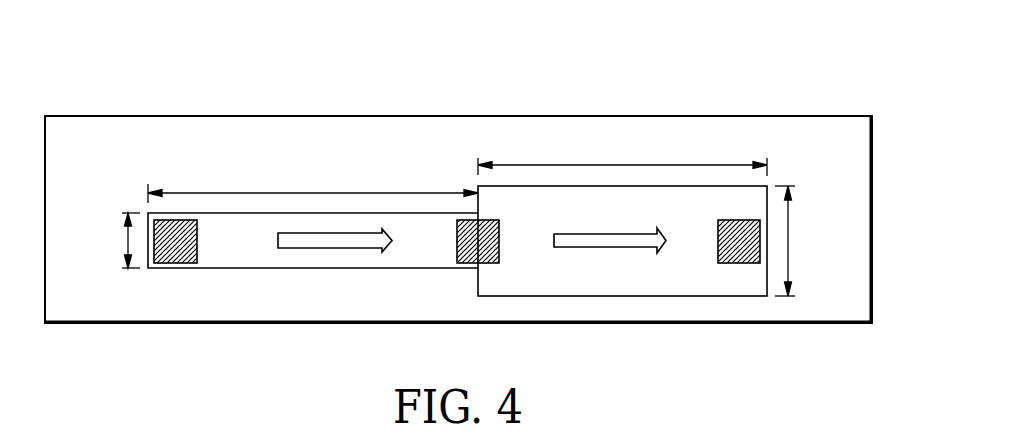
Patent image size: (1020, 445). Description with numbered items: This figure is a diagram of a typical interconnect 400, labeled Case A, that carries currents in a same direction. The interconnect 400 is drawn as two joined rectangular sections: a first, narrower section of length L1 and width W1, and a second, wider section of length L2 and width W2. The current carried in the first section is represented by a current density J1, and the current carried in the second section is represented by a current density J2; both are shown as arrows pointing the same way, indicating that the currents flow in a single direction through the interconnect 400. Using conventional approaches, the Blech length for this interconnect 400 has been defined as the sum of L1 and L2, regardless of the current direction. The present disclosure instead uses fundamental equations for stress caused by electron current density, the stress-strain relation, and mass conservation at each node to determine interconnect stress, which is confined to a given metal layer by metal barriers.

The interconnect 400 is at (459, 177).
The length of first interconnect section L1 is at (313, 186).
The length of second interconnect section L2 is at (622, 158).
The width of first interconnect section W1 is at (118, 240).
The width of second interconnect section W2 is at (799, 241).
The current density J1 is at (321, 240).
The current density J2 is at (610, 231).